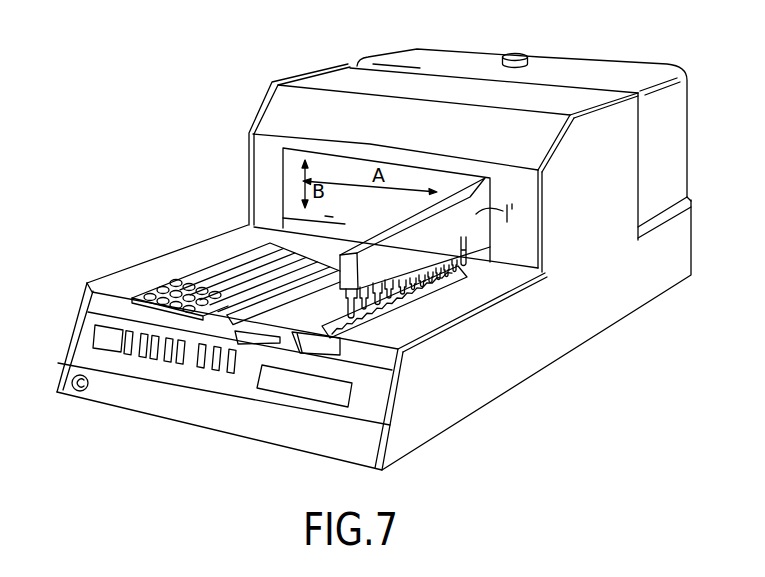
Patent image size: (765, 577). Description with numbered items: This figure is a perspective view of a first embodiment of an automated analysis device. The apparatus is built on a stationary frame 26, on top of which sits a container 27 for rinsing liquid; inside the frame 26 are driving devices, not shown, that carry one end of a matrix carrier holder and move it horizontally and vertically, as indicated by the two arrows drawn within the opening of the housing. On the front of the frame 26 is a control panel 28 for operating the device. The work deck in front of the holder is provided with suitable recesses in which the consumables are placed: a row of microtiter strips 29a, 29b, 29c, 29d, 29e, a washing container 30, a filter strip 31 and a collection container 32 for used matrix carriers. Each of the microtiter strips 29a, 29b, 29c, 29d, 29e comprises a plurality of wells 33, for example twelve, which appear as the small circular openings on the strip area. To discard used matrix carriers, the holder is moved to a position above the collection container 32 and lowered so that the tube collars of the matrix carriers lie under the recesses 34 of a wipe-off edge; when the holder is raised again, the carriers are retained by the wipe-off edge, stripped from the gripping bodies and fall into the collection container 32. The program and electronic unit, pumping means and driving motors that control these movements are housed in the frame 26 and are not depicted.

The stationary frame 26 is at (523, 367).
The container for rinsing liquid 27 is at (585, 73).
The control panel 28 is at (100, 333).
The microtiter strip 29a is at (257, 257).
The microtiter strip 29b is at (235, 270).
The microtiter strip 29c is at (213, 280).
The microtiter strip 29d is at (193, 310).
The microtiter strip 29e is at (202, 312).
The washing container 30 is at (242, 312).
The filter strip 31 is at (263, 333).
The collection container 32 is at (320, 350).
The wells 33 is at (160, 287).
The recesses of a wipe-off edge 34 is at (363, 316).